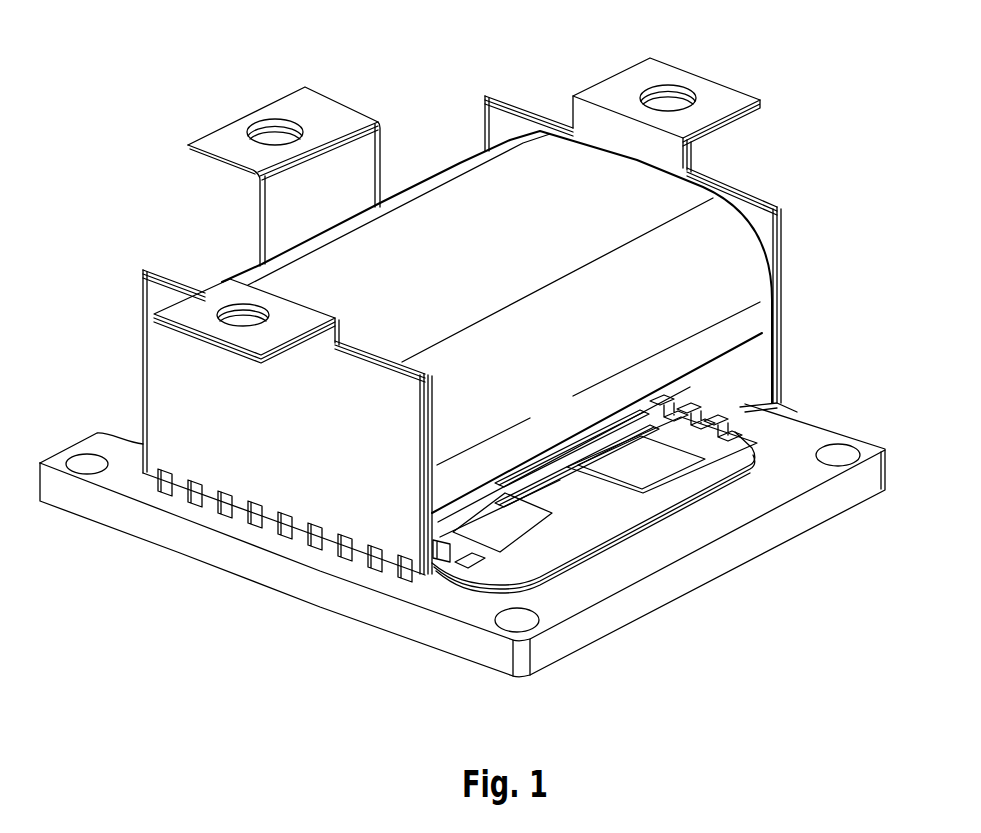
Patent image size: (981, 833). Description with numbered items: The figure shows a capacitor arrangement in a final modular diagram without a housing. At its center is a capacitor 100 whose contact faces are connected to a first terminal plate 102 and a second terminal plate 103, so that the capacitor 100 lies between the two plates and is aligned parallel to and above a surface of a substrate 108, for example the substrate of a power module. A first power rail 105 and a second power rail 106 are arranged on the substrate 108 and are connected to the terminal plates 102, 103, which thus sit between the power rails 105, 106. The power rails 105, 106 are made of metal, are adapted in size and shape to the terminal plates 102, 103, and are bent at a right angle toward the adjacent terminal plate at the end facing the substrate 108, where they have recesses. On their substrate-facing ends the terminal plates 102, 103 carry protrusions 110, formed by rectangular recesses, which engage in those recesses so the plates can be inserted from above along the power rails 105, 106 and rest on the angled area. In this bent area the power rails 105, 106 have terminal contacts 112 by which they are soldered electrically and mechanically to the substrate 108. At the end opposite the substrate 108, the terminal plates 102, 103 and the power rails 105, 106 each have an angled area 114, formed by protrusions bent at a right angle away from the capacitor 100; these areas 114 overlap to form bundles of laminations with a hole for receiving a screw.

The capacitor 100 is at (489, 201).
The first terminal plate 102 is at (776, 220).
The second terminal plate 103 is at (450, 536).
The first power rail 105 is at (778, 402).
The second power rail 106 is at (178, 378).
The substrate 108 is at (640, 533).
The protrusions 110 is at (285, 522).
The terminal contacts 112 is at (752, 420).
The angled area 114 is at (207, 303).